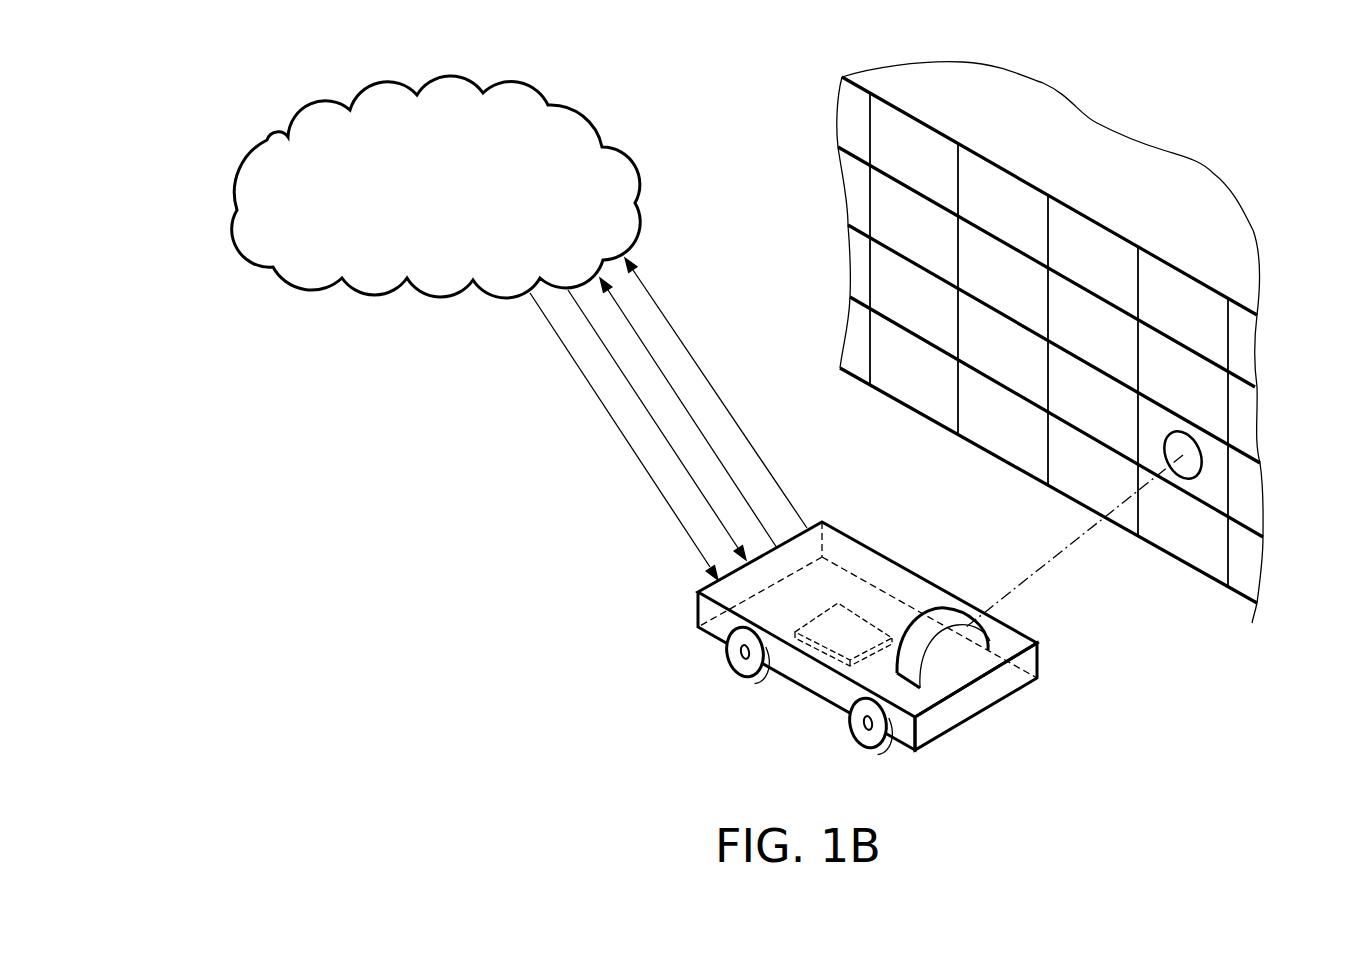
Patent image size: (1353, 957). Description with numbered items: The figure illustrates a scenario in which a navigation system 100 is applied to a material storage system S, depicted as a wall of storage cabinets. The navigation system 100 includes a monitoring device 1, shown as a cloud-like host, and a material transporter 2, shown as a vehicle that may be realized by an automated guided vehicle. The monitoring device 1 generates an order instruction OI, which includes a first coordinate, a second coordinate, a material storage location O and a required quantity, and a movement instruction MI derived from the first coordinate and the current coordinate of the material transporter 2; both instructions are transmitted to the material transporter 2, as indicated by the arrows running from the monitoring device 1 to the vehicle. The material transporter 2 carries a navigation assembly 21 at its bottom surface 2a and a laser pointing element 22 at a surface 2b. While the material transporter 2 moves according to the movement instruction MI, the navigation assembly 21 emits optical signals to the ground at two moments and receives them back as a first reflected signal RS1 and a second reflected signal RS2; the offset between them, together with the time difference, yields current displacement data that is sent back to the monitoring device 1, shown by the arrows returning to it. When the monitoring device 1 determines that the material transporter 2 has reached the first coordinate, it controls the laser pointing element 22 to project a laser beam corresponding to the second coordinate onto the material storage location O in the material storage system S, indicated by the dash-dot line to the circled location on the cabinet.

The navigation system 100 is at (193, 112).
The monitoring device 1 is at (258, 145).
The material transporter 2 is at (697, 608).
The bottom surface 2a is at (1008, 672).
The surface 2b is at (843, 555).
The navigation assembly 21 is at (844, 622).
The laser pointing element 22 is at (975, 636).
The order instruction OI is at (578, 372).
The movement instruction MI is at (638, 397).
The first reflected signal RS1 is at (708, 440).
The second reflected signal RS2 is at (755, 450).
The material storage system S is at (763, 242).
The material storage location O is at (1200, 473).